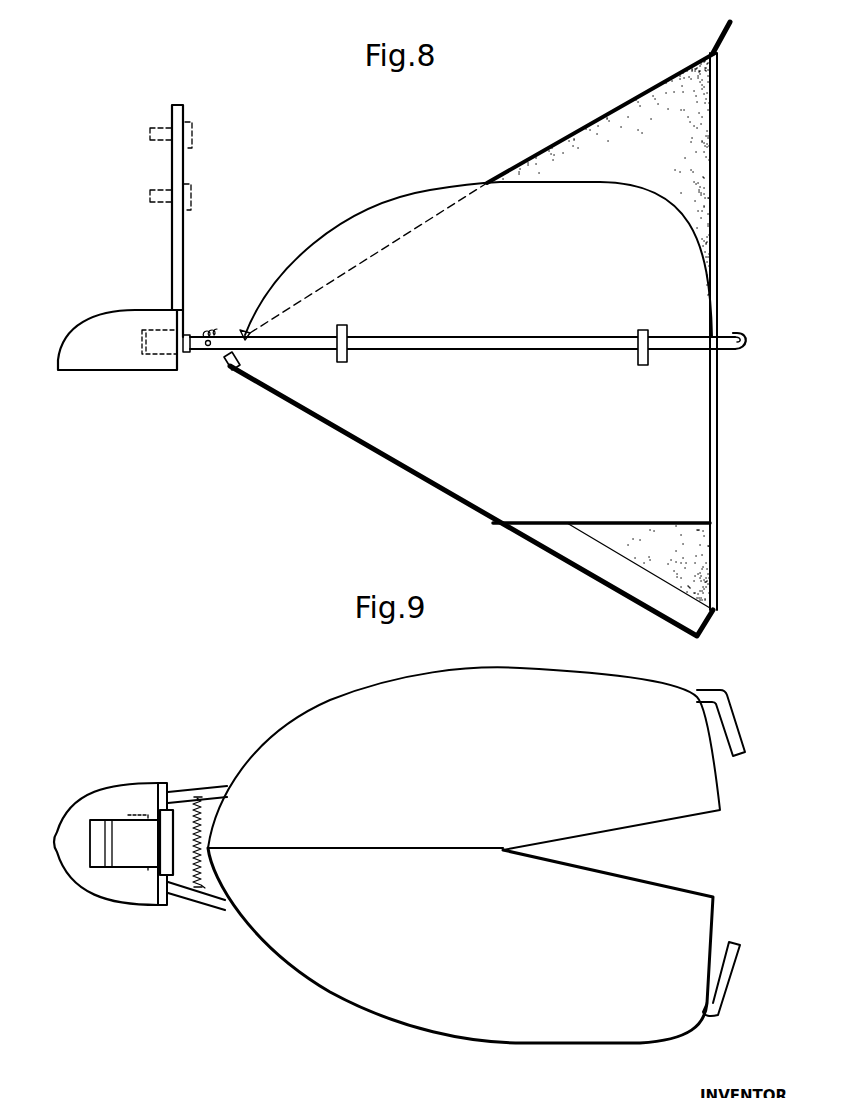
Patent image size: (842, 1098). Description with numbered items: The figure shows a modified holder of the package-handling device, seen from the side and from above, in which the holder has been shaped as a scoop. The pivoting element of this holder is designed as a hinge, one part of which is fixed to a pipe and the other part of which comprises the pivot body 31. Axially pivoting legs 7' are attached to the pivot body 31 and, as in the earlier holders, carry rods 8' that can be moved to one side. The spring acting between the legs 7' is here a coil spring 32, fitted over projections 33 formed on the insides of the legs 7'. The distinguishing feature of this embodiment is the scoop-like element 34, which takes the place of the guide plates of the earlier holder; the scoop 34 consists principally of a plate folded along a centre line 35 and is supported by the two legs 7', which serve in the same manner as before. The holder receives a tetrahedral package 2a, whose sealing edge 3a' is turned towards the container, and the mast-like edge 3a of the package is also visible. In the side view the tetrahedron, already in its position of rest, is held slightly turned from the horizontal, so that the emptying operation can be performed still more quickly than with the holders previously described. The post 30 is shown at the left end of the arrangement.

In FIG. 8, the tetrahedral package 2a is at (590, 140).
In FIG. 8, the mast 3a is at (696, 311).
In FIG. 8, the sealing edge 3a' is at (623, 565).
In FIG. 8, the axially pivoting legs 7' is at (459, 336).
In FIG. 9, the axially pivoting legs 7' is at (212, 824).
In FIG. 8, the rods 8' is at (741, 323).
In FIG. 9, the rods 8' is at (721, 836).
In FIG. 8, the post 30 is at (183, 237).
In FIG. 9, the post 30 is at (156, 808).
In FIG. 8, the pivot body 31 is at (107, 360).
In FIG. 9, the pivot body 31 is at (98, 807).
In FIG. 8, the coil spring 32 is at (212, 330).
In FIG. 9, the coil spring 32 is at (202, 838).
In FIG. 9, the projections 33 is at (197, 800).
In FIG. 8, the scoop-like element 34 is at (422, 470).
In FIG. 9, the scoop-like element 34 is at (428, 683).
In FIG. 9, the centre line 35 is at (370, 848).